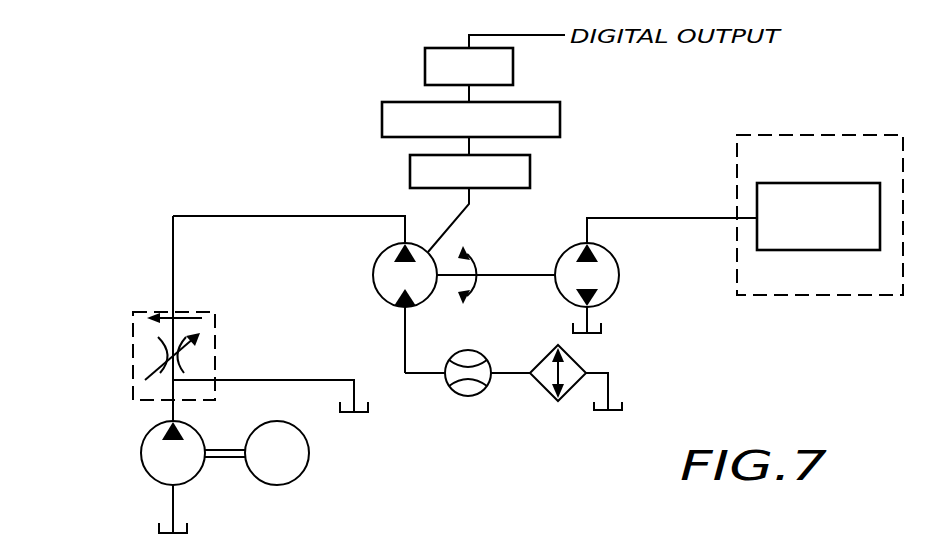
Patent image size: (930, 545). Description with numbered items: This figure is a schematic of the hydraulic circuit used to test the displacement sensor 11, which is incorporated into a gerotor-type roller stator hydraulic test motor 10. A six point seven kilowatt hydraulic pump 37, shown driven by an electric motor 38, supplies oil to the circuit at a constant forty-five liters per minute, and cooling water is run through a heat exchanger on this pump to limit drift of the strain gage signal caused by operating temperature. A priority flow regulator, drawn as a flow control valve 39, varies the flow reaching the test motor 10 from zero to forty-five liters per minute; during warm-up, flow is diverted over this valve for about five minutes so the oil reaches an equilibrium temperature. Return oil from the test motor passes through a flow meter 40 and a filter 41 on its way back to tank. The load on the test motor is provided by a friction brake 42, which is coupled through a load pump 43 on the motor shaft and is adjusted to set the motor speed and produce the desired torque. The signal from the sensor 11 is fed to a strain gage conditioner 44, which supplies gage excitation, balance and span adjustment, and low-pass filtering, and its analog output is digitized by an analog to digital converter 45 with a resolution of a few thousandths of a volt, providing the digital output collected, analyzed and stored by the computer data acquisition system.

The motor 10 is at (378, 296).
The sensor 11 is at (530, 170).
The hydraulic pump 37 is at (142, 458).
The electric motor 38 is at (282, 484).
The priority flow regulator 39 is at (147, 312).
The flow meter 40 is at (462, 396).
The filter 41 is at (553, 397).
The friction brake 42 is at (797, 250).
The load pump 43 is at (606, 298).
The conditioner 44 is at (562, 128).
The analog to digital converter 45 is at (425, 64).